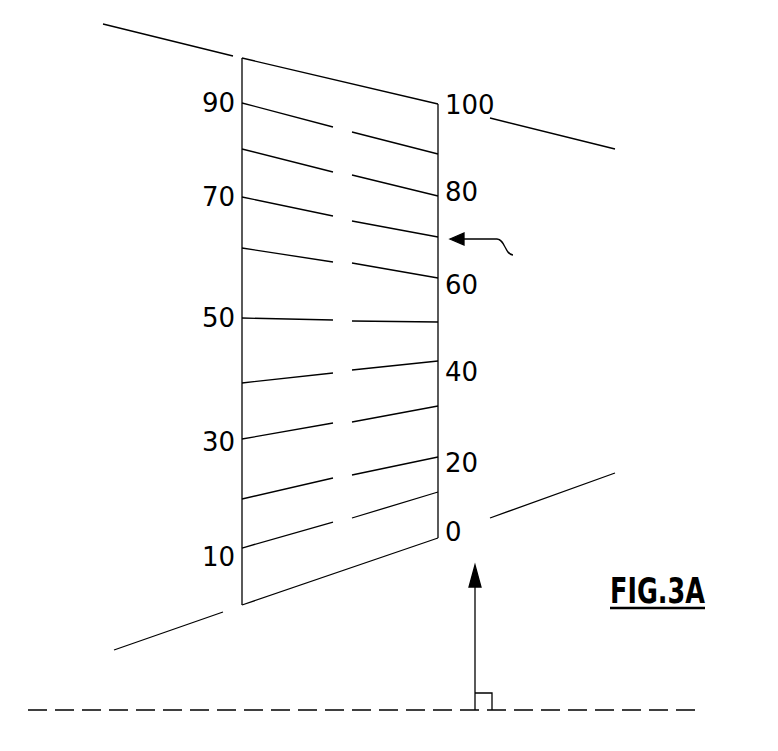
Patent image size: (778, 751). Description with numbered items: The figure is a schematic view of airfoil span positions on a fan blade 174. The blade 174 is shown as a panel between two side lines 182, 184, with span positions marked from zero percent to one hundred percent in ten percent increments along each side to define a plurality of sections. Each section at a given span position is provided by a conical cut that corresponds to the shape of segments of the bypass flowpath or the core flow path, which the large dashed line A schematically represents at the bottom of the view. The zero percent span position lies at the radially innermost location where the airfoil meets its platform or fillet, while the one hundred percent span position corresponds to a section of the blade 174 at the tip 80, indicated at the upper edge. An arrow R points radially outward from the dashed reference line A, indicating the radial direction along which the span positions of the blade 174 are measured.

The tip 80 is at (338, 80).
The leading edge line 182 is at (242, 268).
The trailing edge line 184 is at (438, 307).
The fan blade 174 is at (509, 251).
The radial direction axis R is at (475, 645).
The axial reference line A is at (282, 710).